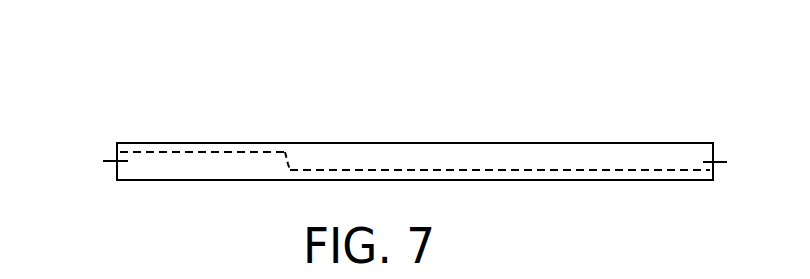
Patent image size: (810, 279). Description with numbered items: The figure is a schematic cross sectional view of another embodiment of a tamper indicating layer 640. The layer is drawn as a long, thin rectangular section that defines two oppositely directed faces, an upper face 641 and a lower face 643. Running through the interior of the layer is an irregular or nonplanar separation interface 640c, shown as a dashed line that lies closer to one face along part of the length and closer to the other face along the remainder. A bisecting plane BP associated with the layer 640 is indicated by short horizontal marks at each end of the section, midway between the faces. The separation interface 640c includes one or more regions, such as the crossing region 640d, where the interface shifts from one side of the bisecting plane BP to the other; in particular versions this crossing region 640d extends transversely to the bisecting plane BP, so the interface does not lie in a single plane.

The tamper indicating layer 640 is at (90, 82).
The face 641 is at (185, 143).
The face 643 is at (157, 181).
The crossing region 640d is at (290, 161).
The separation interface 640c is at (667, 170).
The bisecting plane BP is at (417, 160).